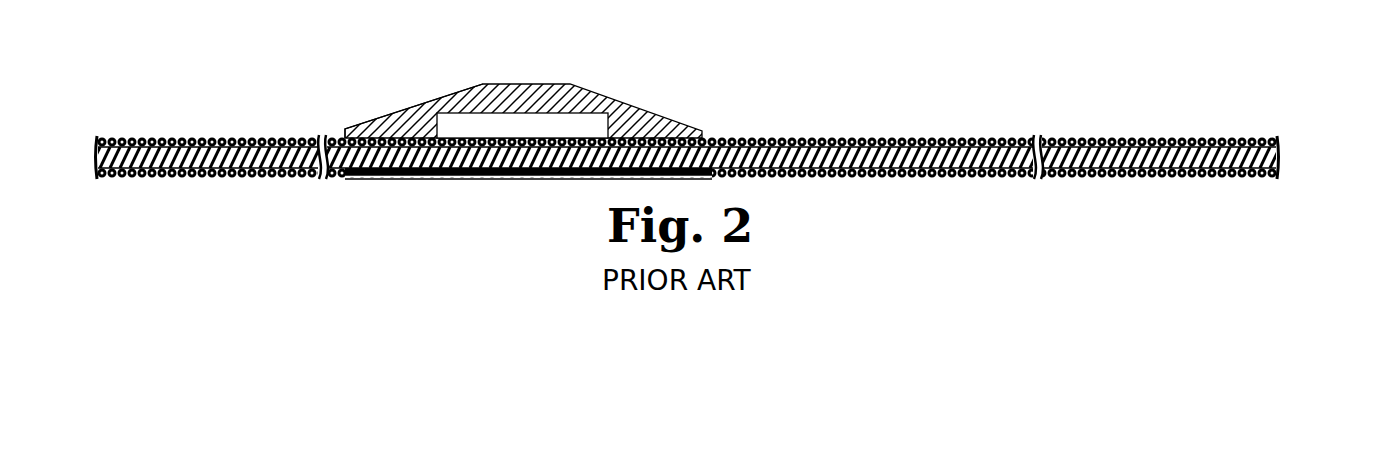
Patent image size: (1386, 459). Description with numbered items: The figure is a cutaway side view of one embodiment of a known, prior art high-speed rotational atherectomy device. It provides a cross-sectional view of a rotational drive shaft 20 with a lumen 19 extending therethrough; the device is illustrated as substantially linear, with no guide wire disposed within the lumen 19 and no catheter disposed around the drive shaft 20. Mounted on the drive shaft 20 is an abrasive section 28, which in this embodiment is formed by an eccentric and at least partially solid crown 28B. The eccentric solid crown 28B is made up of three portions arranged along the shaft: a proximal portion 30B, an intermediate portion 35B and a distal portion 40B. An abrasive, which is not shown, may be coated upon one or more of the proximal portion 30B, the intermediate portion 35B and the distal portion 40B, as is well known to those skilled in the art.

The lumen 19 is at (98, 152).
The rotational drive shaft 20 is at (252, 178).
The abrasive section 28 is at (583, 72).
The eccentric solid crown 28B is at (583, 93).
The proximal portion 30B is at (594, 97).
The intermediate portion 35B is at (506, 83).
The distal portion 40B is at (414, 100).